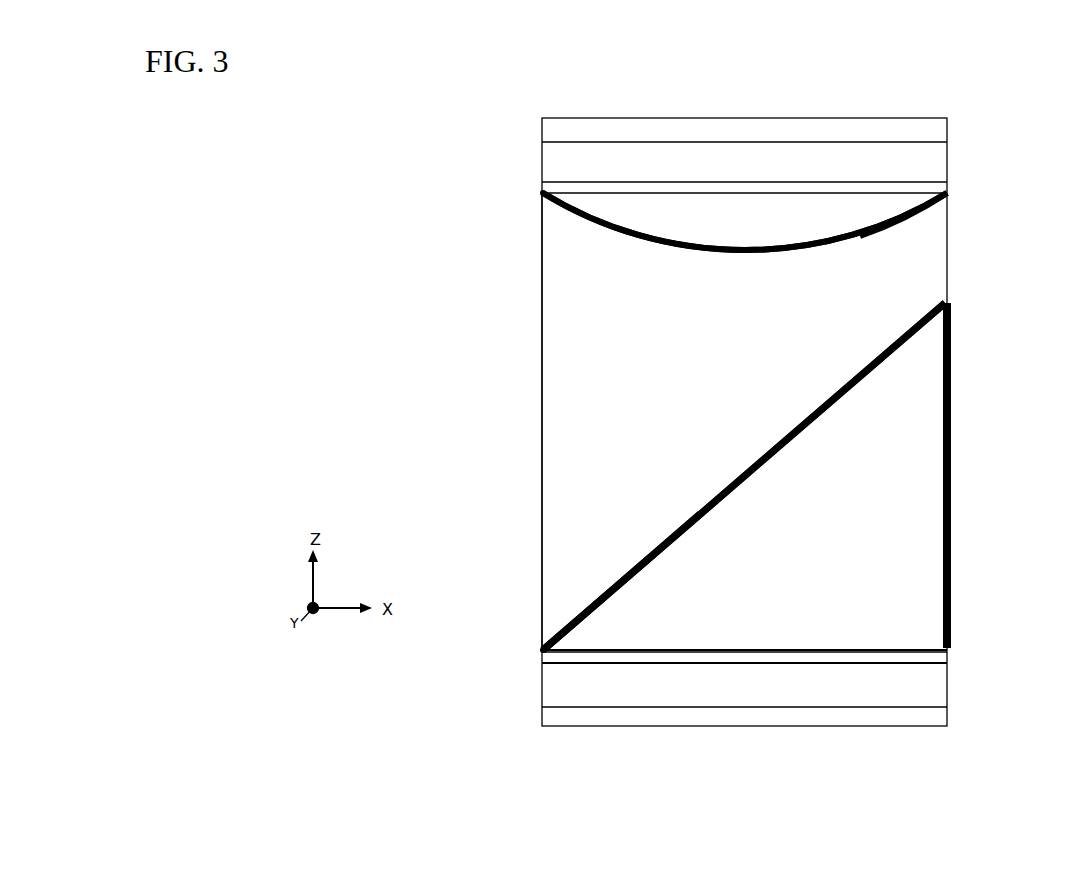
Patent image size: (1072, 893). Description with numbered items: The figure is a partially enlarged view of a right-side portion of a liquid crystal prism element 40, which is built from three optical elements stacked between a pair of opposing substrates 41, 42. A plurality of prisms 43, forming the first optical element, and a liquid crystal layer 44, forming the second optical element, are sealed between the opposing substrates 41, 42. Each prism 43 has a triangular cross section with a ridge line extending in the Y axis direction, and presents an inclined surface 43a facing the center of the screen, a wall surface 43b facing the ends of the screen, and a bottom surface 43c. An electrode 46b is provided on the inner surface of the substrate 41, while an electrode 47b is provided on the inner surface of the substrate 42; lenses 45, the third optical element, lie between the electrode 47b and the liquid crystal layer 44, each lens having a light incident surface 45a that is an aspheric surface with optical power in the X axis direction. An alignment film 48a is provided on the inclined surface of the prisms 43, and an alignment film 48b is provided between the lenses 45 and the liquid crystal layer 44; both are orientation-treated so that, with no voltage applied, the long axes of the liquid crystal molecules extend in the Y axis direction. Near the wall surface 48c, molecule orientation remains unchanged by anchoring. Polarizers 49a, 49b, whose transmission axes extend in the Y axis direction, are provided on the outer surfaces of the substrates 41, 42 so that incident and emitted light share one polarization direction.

The liquid crystal prism element 40 is at (852, 92).
The opposing substrate 41 is at (937, 692).
The opposing substrate 42 is at (938, 167).
The prism 43 is at (905, 532).
The inclined surface 43a is at (613, 598).
The wall surface 43b is at (938, 592).
The bottom surface 43c is at (742, 652).
The liquid crystal layer 44 is at (565, 392).
The lens 45 is at (612, 215).
The light incident surface 45a is at (645, 237).
The electrode 46b is at (550, 658).
The electrode 47b is at (545, 192).
The alignment film 48a is at (650, 547).
The alignment film 48b is at (918, 223).
The wall surface 48c is at (953, 413).
The polarizer 49a is at (938, 718).
The polarizer 49b is at (938, 123).